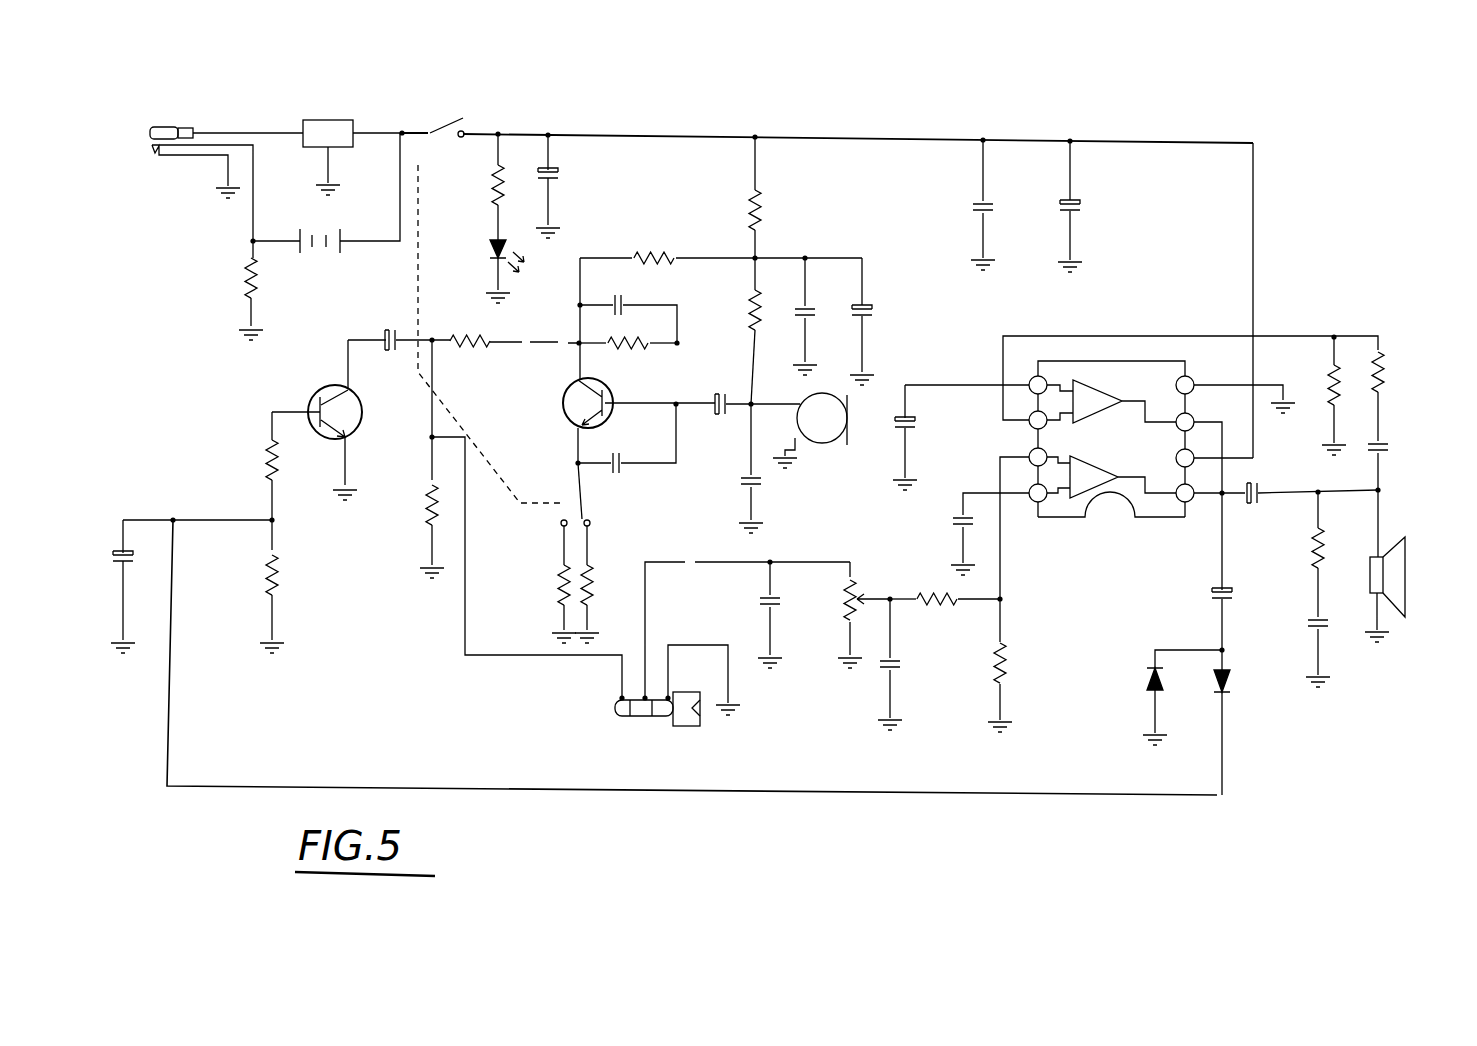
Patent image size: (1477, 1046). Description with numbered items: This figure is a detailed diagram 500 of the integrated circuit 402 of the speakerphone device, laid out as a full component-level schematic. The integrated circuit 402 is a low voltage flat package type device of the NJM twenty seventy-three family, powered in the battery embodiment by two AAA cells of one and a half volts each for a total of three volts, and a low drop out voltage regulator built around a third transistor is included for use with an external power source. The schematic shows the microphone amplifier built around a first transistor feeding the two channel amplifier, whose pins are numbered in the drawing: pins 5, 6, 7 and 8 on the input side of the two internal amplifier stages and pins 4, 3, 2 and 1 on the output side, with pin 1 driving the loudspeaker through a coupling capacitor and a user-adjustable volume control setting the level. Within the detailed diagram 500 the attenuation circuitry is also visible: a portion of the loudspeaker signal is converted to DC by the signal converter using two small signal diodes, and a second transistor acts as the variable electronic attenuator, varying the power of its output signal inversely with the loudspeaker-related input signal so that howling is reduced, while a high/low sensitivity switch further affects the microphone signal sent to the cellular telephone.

The detailed diagram 500 is at (608, 78).
The integrated circuit 402 is at (818, 117).
The amplifier U1 pin 1 is at (1185, 493).
The amplifier U1 pin 2 is at (1185, 458).
The amplifier U1 pin 3 is at (1185, 422).
The amplifier U1 pin 4 is at (1185, 385).
The amplifier U1 pin 5 is at (1038, 385).
The amplifier U1 pin 6 is at (1038, 420).
The amplifier U1 pin 7 is at (1038, 457).
The amplifier U1 pin 8 is at (1038, 493).